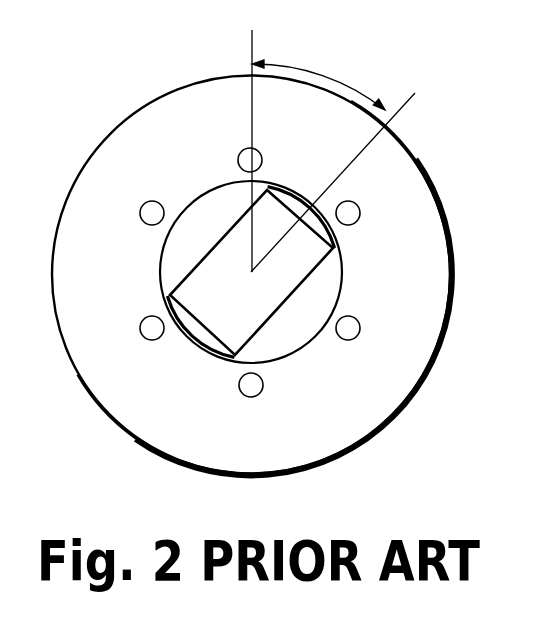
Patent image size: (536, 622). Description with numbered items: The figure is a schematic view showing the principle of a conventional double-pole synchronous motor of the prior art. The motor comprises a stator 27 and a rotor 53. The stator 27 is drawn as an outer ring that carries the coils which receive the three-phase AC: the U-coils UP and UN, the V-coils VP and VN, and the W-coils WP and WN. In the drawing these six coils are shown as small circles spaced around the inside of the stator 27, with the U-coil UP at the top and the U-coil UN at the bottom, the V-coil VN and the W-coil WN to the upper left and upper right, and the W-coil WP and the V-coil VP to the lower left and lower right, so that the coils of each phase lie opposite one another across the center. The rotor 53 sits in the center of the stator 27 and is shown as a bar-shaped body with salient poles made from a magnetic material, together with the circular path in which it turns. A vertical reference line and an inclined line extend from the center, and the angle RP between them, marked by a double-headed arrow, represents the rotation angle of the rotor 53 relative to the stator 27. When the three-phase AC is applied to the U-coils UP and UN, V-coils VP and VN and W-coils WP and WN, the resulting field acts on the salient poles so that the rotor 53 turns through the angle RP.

The stator 27 is at (108, 153).
The rotor 53 is at (237, 293).
The angle RP is at (318, 70).
The U-coil UP is at (275, 143).
The V-coil VN is at (123, 224).
The W-coil WN is at (382, 214).
The W-coil WP is at (124, 339).
The V-coil VP is at (363, 347).
The U-coil UN is at (226, 400).